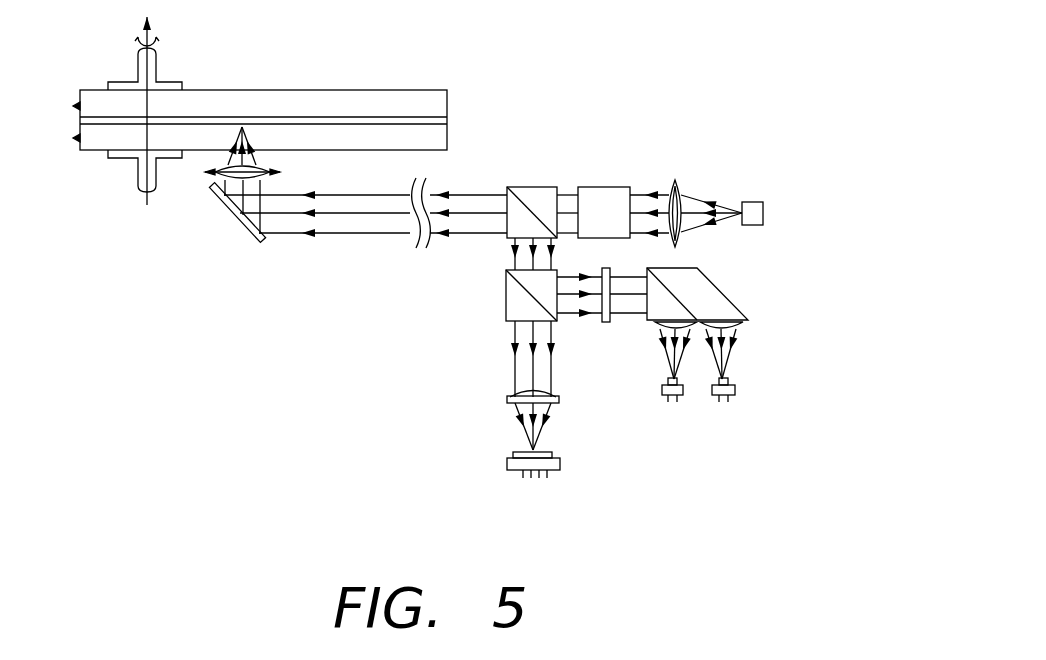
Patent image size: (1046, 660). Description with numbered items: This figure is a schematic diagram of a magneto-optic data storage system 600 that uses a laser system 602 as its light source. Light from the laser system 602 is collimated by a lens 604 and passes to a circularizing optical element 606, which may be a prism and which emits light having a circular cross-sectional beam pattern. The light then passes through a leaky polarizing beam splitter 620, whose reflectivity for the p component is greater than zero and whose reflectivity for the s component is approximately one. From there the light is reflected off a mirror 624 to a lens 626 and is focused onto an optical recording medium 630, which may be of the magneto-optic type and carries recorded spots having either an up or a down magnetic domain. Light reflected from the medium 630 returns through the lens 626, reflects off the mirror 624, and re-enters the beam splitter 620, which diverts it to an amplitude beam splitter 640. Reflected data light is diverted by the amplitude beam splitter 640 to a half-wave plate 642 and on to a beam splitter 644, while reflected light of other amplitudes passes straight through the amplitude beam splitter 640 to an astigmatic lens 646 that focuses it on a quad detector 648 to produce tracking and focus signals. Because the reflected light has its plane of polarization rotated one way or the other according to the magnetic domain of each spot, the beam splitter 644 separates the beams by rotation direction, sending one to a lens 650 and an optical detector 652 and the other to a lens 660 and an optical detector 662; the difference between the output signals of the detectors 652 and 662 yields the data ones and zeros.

The magneto-optic data storage system 600 is at (256, 331).
The laser system 602 is at (765, 213).
The lens 604 is at (678, 191).
The circularizing optical element 606 is at (605, 185).
The leaky polarizing beam splitter 620 is at (527, 185).
The mirror 624 is at (250, 241).
The lens 626 is at (214, 174).
The optical recording medium 630 is at (396, 88).
The amplitude beam splitter 640 is at (506, 305).
The half-wave plate 642 is at (606, 323).
The beam splitter 644 is at (718, 277).
The astigmatic lens 646 is at (507, 398).
The quad detector 648 is at (507, 466).
The lens 650 is at (657, 328).
The optical detector 652 is at (684, 394).
The lens 660 is at (746, 327).
The optical detector 662 is at (736, 392).